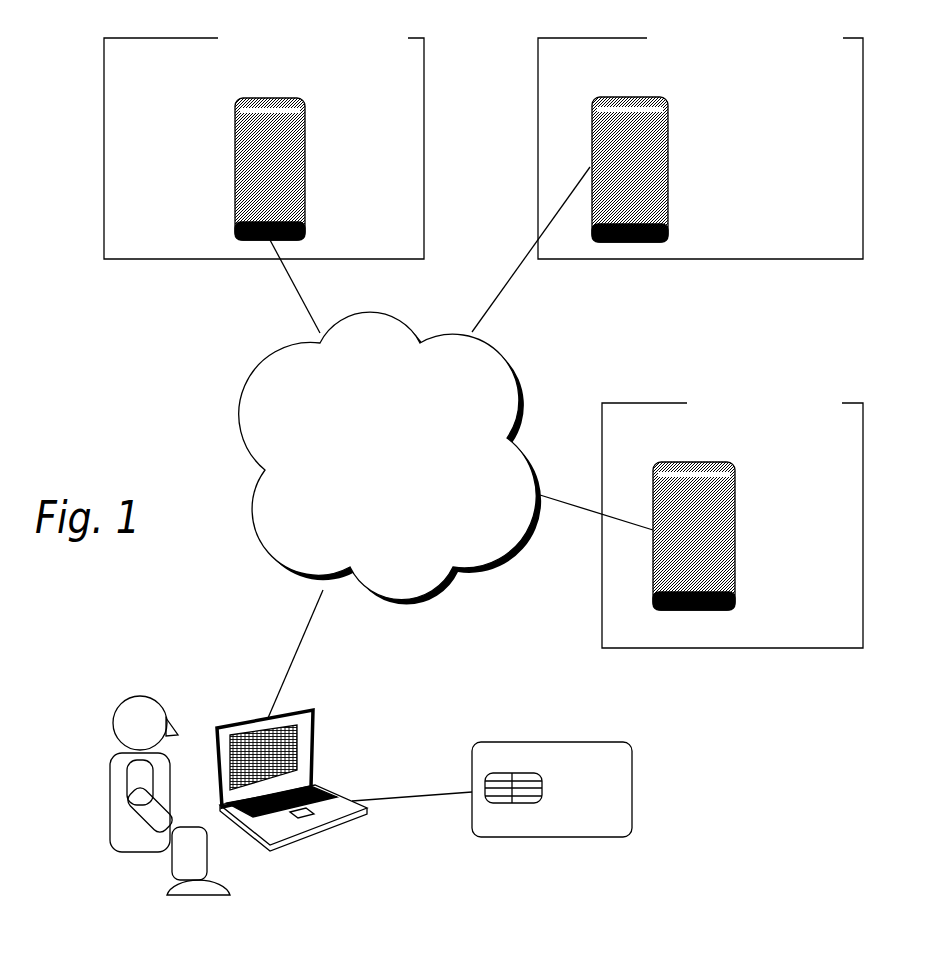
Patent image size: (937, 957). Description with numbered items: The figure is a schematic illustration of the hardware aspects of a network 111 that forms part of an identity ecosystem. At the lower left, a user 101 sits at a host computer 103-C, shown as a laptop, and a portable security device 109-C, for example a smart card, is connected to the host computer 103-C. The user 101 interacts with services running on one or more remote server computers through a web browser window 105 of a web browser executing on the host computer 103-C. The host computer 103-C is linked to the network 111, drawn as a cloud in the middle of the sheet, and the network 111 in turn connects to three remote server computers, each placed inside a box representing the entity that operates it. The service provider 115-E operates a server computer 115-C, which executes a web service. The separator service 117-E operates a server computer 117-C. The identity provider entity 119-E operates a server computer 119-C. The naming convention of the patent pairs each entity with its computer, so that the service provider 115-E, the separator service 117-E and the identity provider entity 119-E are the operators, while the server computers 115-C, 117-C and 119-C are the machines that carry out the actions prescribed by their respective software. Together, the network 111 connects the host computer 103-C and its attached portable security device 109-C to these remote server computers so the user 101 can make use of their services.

The user 101 is at (131, 795).
The host computer 103-C is at (302, 813).
The web browser window 105 is at (334, 736).
The portable security device 109-C is at (600, 803).
The network 111 is at (350, 458).
The service provider 115-E is at (264, 144).
The server computer of service provider 115-C is at (316, 169).
The separator service 117-E is at (700, 144).
The server computer of separator service 117-C is at (681, 169).
The identity provider entity 119-E is at (732, 519).
The server computer of identity provider entity 119-C is at (745, 536).